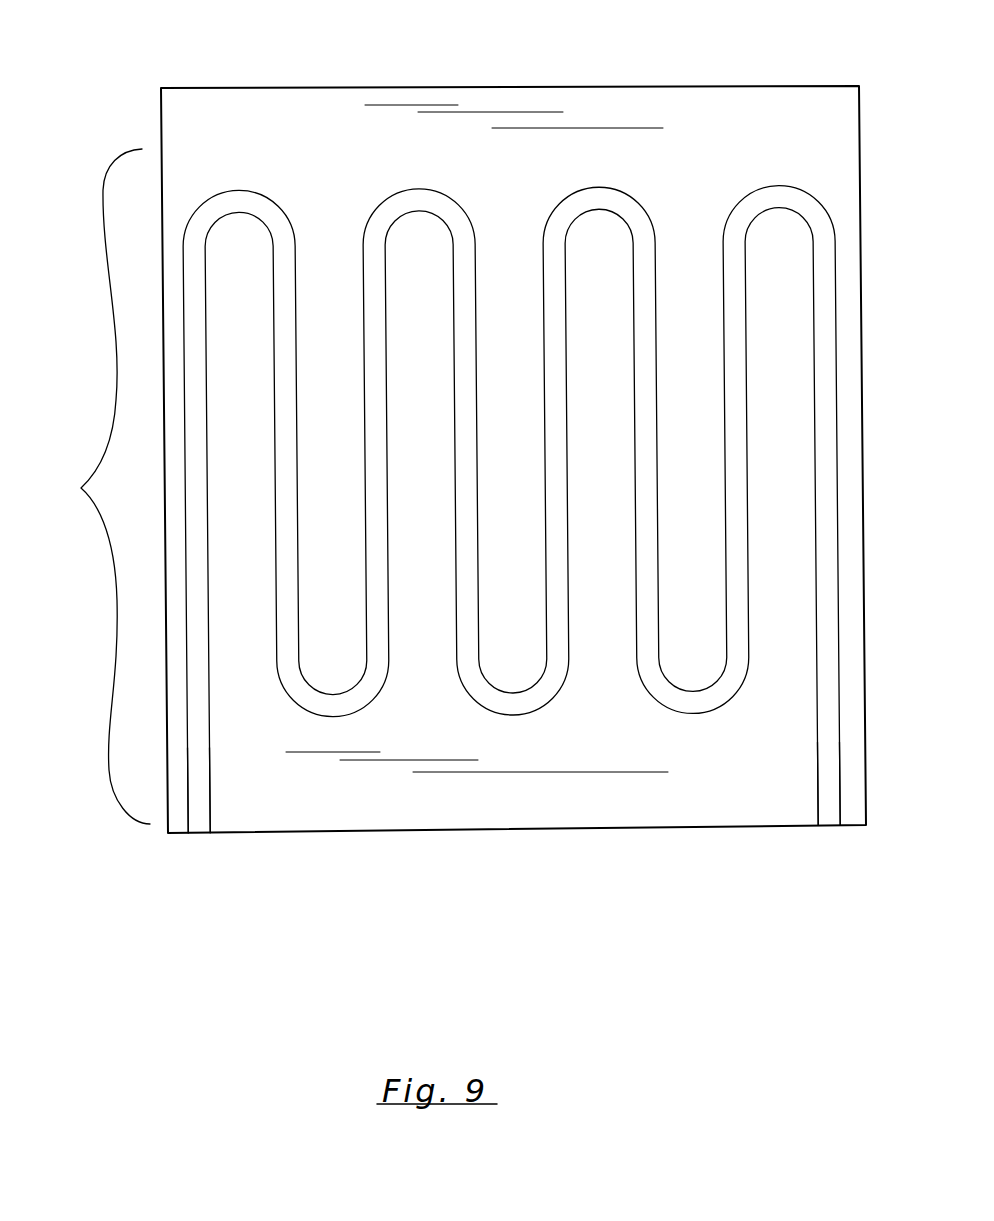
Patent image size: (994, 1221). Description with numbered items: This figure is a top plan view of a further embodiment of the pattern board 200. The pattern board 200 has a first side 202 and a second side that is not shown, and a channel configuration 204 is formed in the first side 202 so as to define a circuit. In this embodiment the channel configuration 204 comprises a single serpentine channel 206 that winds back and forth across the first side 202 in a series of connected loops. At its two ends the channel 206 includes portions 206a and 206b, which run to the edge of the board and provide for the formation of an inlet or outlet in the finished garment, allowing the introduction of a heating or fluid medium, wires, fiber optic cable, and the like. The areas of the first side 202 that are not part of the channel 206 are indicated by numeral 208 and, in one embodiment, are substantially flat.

The pattern board 200 is at (450, 454).
The first side 202 is at (776, 104).
The channel configuration 204 is at (92, 486).
The serpentine channel 206 is at (265, 206).
The portion of channel 206a is at (201, 820).
The portion of channel 206b is at (832, 795).
The portions of first side not part of channel 208 is at (507, 257).